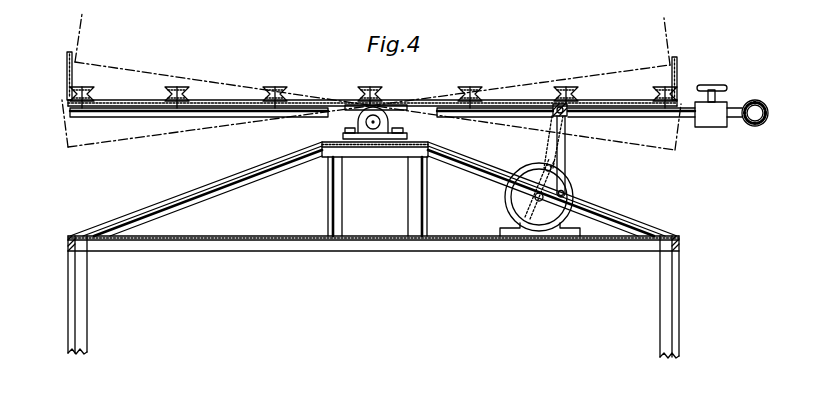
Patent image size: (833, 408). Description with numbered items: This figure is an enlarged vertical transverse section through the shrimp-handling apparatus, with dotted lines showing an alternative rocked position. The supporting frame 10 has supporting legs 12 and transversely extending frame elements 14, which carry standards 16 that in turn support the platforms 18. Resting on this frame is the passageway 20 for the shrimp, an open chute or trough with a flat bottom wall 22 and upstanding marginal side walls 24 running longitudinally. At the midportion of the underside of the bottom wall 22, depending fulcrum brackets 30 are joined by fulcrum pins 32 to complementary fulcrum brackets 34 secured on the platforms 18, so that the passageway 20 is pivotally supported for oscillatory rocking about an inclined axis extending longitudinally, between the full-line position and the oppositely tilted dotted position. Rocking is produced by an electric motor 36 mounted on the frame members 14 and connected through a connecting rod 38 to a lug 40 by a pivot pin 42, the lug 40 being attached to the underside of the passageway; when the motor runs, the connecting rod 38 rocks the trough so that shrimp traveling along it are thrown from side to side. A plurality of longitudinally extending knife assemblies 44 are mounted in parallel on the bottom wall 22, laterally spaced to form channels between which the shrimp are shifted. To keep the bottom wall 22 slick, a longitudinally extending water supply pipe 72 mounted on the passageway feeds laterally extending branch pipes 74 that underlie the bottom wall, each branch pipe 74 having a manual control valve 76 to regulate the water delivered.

The supporting frame 10 is at (200, 180).
The supporting legs 12 is at (78, 288).
The transversely extending frame elements 14 is at (287, 242).
The standards 16 is at (411, 191).
The platforms 18 is at (417, 143).
The passageway 20 is at (143, 97).
The bottom wall 22 is at (227, 100).
The marginal side walls 24 is at (67, 68).
The fulcrum brackets 30 is at (357, 111).
The fulcrum pins 32 is at (375, 120).
The complementary fulcrum brackets 34 is at (370, 139).
The electric motor 36 is at (518, 192).
The connecting rod 38 is at (566, 170).
The lug 40 is at (567, 113).
The pivot pin 42 is at (556, 103).
The knife assemblies 44 is at (180, 91).
The water supply pipe 72 is at (768, 108).
The branch pipes 74 is at (652, 116).
The manual control valve 76 is at (717, 107).